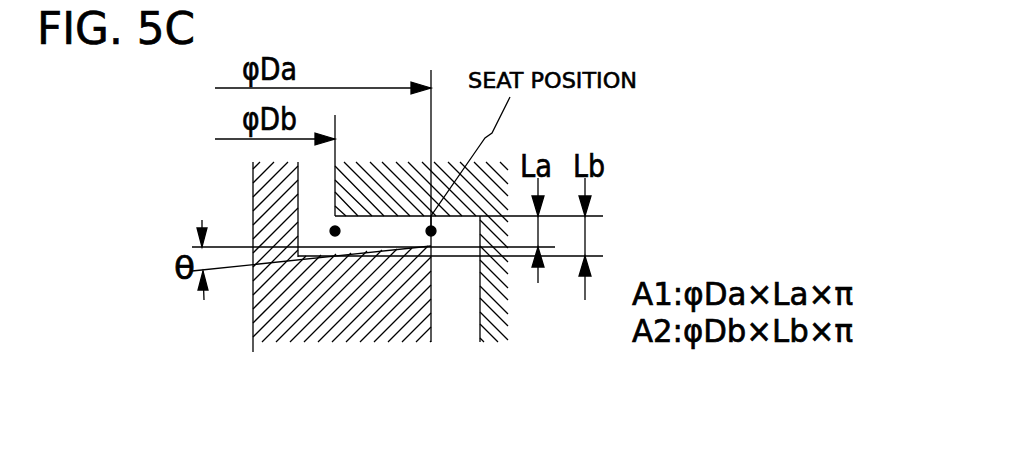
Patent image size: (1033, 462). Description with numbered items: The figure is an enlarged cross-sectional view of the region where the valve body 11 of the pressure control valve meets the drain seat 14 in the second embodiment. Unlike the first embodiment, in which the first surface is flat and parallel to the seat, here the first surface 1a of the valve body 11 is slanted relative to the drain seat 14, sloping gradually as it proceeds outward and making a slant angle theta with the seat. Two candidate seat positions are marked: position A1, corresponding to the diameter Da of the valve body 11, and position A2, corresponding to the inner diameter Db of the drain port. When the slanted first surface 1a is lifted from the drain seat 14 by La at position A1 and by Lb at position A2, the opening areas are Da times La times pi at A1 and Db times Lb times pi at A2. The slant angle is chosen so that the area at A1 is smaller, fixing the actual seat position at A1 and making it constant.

The valve body 11 is at (342, 298).
The first surface 1a is at (311, 340).
The drain seat 14 is at (469, 217).
The position A1 is at (474, 330).
The position A2 is at (282, 330).